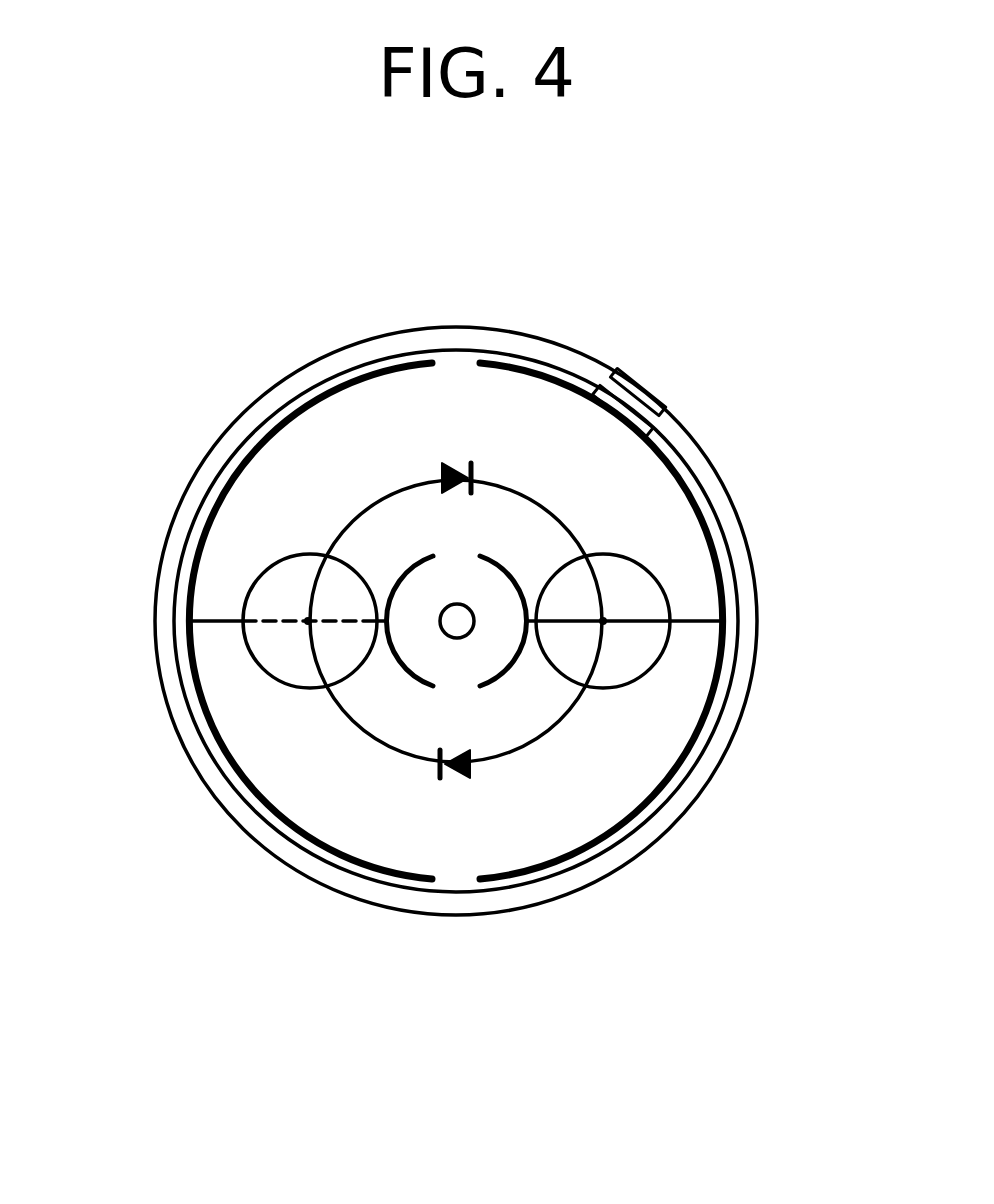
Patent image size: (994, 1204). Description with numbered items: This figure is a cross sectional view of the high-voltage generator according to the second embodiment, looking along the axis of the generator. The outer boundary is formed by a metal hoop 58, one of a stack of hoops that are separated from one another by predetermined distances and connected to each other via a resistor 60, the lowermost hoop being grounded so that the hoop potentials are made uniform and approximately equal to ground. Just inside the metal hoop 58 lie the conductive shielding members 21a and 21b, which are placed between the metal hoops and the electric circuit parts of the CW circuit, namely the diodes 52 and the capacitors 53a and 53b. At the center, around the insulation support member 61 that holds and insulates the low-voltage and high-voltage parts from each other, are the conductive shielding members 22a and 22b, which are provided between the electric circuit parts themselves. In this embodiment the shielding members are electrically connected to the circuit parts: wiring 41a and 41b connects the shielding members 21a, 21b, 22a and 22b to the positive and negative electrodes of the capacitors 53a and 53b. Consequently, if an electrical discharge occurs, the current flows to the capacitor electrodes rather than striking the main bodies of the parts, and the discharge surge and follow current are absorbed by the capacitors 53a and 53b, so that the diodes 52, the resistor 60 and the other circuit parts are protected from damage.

The metal hoop 58 is at (707, 457).
The resistor 60 is at (643, 380).
The conductive shielding member 21a is at (722, 582).
The conductive shielding member 21b is at (200, 552).
The conductive shielding member 22a is at (510, 667).
The conductive shielding member 22b is at (403, 670).
The capacitor 53a is at (652, 670).
The capacitor 53b is at (290, 558).
The wiring 41a is at (693, 623).
The wiring 41b is at (195, 671).
The diode 52 is at (452, 463).
The insulation support member 61 is at (457, 639).